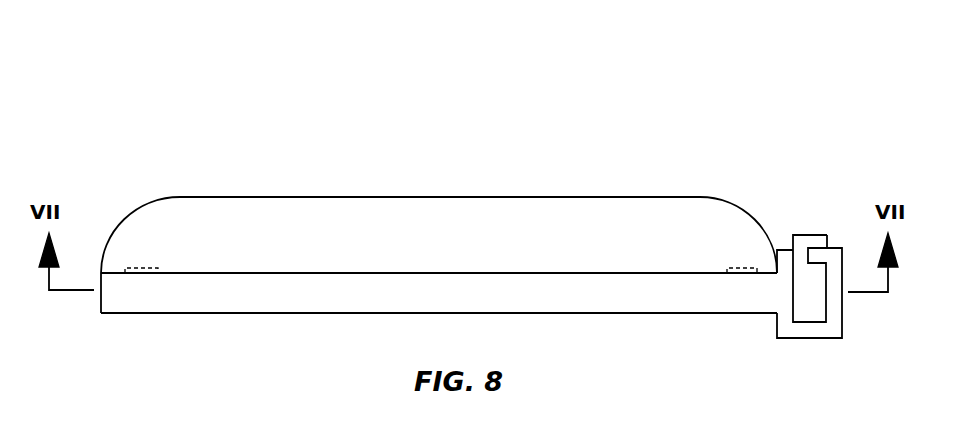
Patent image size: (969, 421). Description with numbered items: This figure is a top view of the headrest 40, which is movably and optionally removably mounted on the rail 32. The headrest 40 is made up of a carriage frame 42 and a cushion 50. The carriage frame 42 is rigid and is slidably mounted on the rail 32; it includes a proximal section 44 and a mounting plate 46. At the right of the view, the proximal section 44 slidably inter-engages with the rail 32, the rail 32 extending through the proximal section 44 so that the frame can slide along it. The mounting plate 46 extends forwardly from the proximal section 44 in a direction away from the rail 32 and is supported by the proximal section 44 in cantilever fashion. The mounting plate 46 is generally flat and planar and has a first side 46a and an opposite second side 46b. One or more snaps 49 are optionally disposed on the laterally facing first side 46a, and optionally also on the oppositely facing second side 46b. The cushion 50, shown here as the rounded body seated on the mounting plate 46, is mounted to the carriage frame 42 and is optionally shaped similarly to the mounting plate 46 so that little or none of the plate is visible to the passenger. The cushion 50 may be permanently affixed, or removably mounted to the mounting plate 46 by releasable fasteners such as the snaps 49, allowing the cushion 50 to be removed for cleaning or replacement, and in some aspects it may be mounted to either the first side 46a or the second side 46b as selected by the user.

The headrest 40 is at (313, 145).
The cushion 50 is at (243, 227).
The mounting plate 46 is at (270, 297).
The first side 46a is at (420, 273).
The second side 46b is at (318, 313).
The carriage frame 42 is at (658, 301).
The proximal section 44 is at (807, 328).
The rail 32 is at (808, 292).
The snaps 49 is at (140, 265).